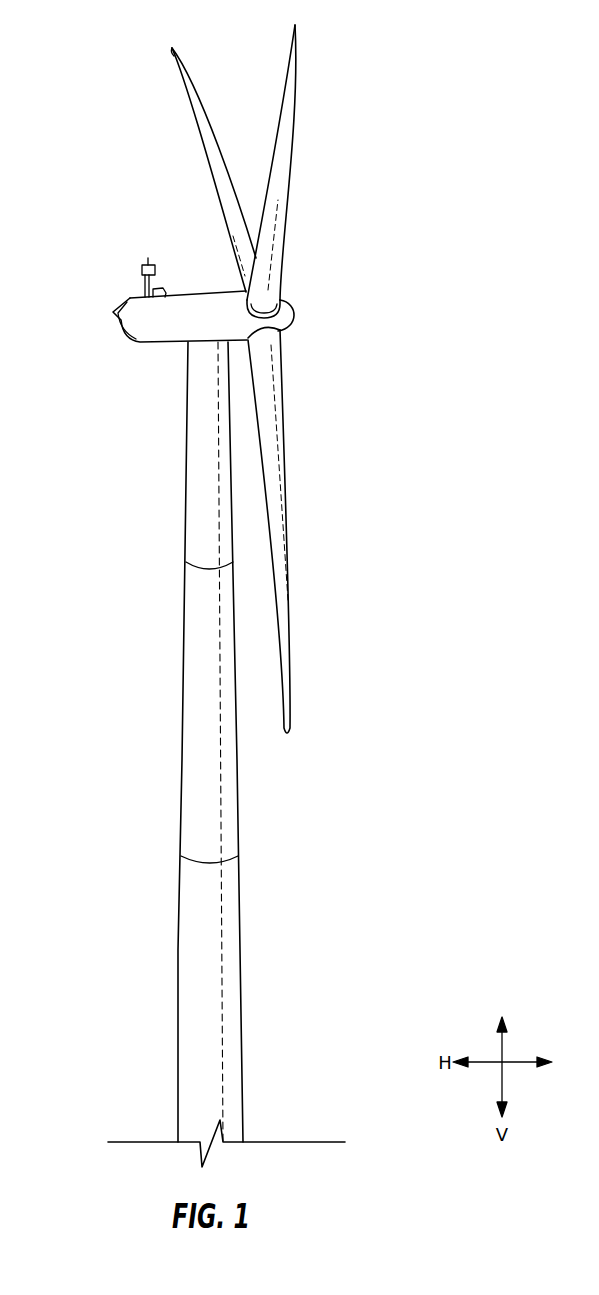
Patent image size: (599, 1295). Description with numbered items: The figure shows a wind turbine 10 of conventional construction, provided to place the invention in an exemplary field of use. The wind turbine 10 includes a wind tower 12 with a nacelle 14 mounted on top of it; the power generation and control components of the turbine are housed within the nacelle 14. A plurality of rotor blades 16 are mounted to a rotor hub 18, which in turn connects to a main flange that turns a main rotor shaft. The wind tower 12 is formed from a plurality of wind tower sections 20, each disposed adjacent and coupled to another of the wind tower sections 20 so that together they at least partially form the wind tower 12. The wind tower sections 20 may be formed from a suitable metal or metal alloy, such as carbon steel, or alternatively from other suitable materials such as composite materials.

The wind turbine 10 is at (184, 583).
The wind tower 12 is at (166, 753).
The nacelle 14 is at (158, 330).
The rotor blades 16 is at (268, 447).
The rotor hub 18 is at (290, 318).
The wind tower sections 20 is at (220, 802).